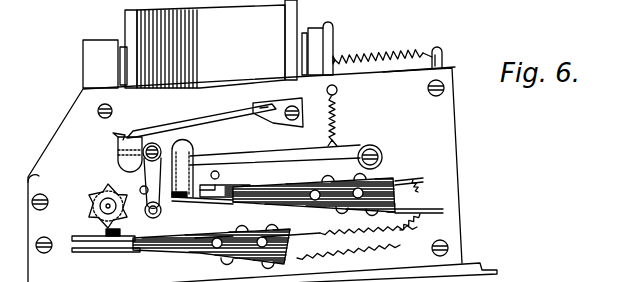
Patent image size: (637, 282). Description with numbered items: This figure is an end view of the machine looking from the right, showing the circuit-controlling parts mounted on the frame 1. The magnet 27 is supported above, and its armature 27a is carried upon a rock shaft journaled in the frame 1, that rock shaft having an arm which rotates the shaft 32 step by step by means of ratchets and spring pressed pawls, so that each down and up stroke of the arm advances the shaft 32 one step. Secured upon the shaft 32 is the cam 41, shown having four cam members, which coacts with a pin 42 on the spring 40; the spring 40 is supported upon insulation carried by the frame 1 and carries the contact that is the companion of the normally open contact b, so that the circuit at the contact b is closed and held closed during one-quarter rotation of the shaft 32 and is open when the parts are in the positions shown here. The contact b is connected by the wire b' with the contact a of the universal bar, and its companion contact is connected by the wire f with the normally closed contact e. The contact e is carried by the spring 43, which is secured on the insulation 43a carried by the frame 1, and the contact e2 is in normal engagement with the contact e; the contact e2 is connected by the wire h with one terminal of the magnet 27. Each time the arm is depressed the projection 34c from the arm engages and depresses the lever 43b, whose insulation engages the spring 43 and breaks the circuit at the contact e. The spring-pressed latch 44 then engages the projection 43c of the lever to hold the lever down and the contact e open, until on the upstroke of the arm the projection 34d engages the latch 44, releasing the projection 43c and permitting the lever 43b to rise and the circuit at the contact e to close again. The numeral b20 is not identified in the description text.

The frame 1 is at (453, 109).
The magnet 27 is at (208, 44).
The armature 27a is at (317, 50).
The spring-pressed latch 44 is at (165, 138).
The projection 34d is at (118, 137).
The projection 34c is at (187, 150).
The cam 41 is at (97, 192).
The shaft 32 is at (108, 198).
The lever 43b is at (250, 162).
The projection 43c is at (204, 179).
The insulation 43a is at (393, 173).
The spring 43 is at (243, 202).
The spring 40 is at (198, 226).
The pin 42 is at (125, 240).
The contact e is at (202, 209).
The contact e2 is at (225, 180).
The wire h is at (425, 185).
The wire f is at (439, 202).
The contact b is at (104, 265).
The bar b20 is at (80, 240).
The wire b' is at (339, 250).